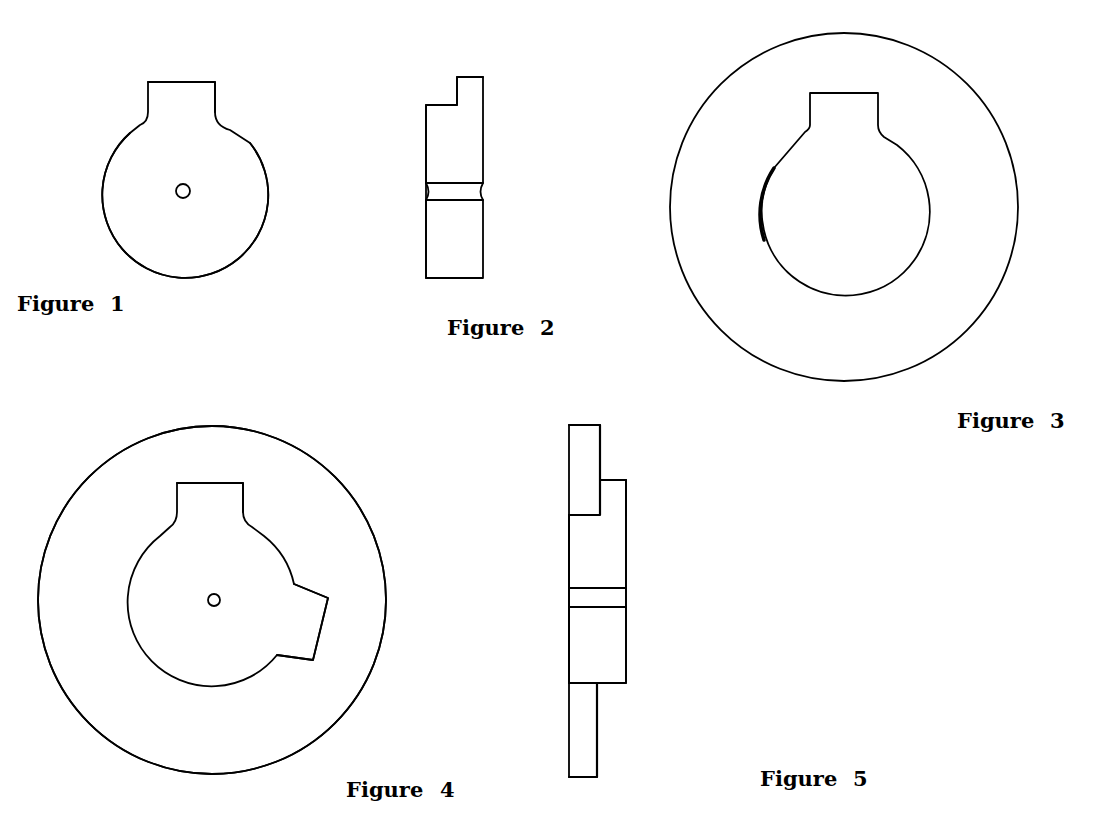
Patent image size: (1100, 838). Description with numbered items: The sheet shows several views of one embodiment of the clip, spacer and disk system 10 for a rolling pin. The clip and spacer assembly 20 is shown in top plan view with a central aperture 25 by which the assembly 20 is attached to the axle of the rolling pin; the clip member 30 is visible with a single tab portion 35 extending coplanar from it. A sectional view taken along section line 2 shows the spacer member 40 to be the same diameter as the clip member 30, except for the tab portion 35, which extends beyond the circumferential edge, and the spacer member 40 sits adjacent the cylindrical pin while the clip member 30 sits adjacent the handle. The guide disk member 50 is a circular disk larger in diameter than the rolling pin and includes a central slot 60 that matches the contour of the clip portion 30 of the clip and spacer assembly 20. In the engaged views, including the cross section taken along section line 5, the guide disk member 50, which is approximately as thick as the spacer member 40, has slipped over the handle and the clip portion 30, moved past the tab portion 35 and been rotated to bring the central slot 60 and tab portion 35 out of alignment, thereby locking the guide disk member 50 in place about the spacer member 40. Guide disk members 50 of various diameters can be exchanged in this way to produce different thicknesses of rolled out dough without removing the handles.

In FIG. 4, the clip, spacer and disk system 10 is at (386, 689).
In FIG. 5, the clip, spacer and disk system 10 is at (770, 565).
In FIG. 1, the clip and spacer assembly 20 is at (260, 137).
In FIG. 1, the central aperture 25 is at (188, 197).
In FIG. 2, the central aperture 25 is at (479, 191).
In FIG. 4, the central aperture 25 is at (219, 595).
In FIG. 5, the central aperture 25 is at (622, 602).
In FIG. 1, the clip member 30 is at (233, 203).
In FIG. 2, the clip member 30 is at (472, 242).
In FIG. 4, the clip member 30 is at (194, 652).
In FIG. 5, the clip member 30 is at (610, 562).
In FIG. 1, the tab portion 35 is at (195, 98).
In FIG. 2, the tab portion 35 is at (477, 88).
In FIG. 4, the tab portion 35 is at (219, 497).
In FIG. 5, the tab portion 35 is at (615, 500).
In FIG. 2, the spacer member 40 is at (440, 113).
In FIG. 5, the spacer member 40 is at (577, 543).
In FIG. 3, the guide disk member 50 is at (965, 117).
In FIG. 4, the guide disk member 50 is at (109, 699).
In FIG. 5, the guide disk member 50 is at (582, 455).
In FIG. 3, the central slot 60 is at (790, 213).
In FIG. 4, the central slot 60 is at (313, 617).
In FIG. 1, the line 2–2' 2 is at (179, 60).
In FIG. 4, the line 5–5' 5 is at (207, 412).